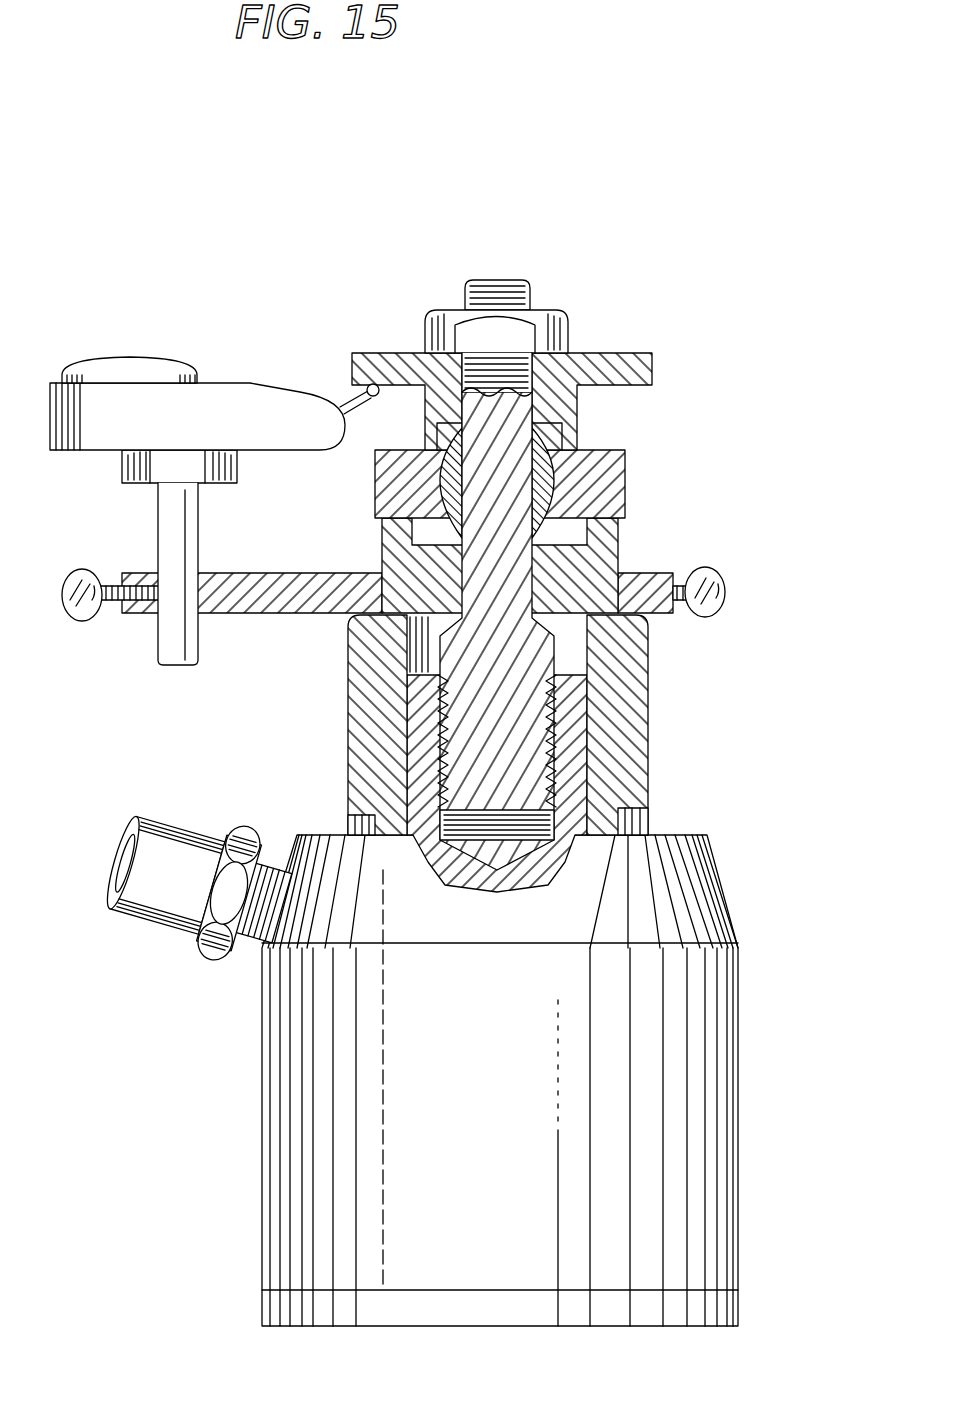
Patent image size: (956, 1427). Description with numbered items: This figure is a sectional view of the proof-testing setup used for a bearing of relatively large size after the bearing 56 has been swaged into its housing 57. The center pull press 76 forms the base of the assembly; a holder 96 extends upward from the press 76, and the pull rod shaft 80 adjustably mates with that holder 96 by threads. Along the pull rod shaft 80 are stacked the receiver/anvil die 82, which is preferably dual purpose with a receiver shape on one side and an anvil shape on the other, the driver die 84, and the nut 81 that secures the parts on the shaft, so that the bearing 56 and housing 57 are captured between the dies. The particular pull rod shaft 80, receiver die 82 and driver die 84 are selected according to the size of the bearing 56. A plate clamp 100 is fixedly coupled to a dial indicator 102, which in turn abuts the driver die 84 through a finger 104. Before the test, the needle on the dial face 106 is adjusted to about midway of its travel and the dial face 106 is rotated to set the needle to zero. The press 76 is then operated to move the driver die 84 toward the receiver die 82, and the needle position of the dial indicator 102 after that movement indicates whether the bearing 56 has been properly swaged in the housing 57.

The bearing 56 is at (425, 493).
The housing 57 is at (625, 452).
The center pull press 76 is at (672, 1018).
The pull rod shaft 80 is at (590, 636).
The nut 81 is at (565, 330).
The receiver/anvil die 82 is at (606, 556).
The driver die 84 is at (636, 367).
The holder 96 is at (560, 747).
The plate clamp 100 is at (720, 588).
The dial indicator 102 is at (232, 397).
The finger 104 is at (332, 405).
The dial face 106 is at (127, 362).